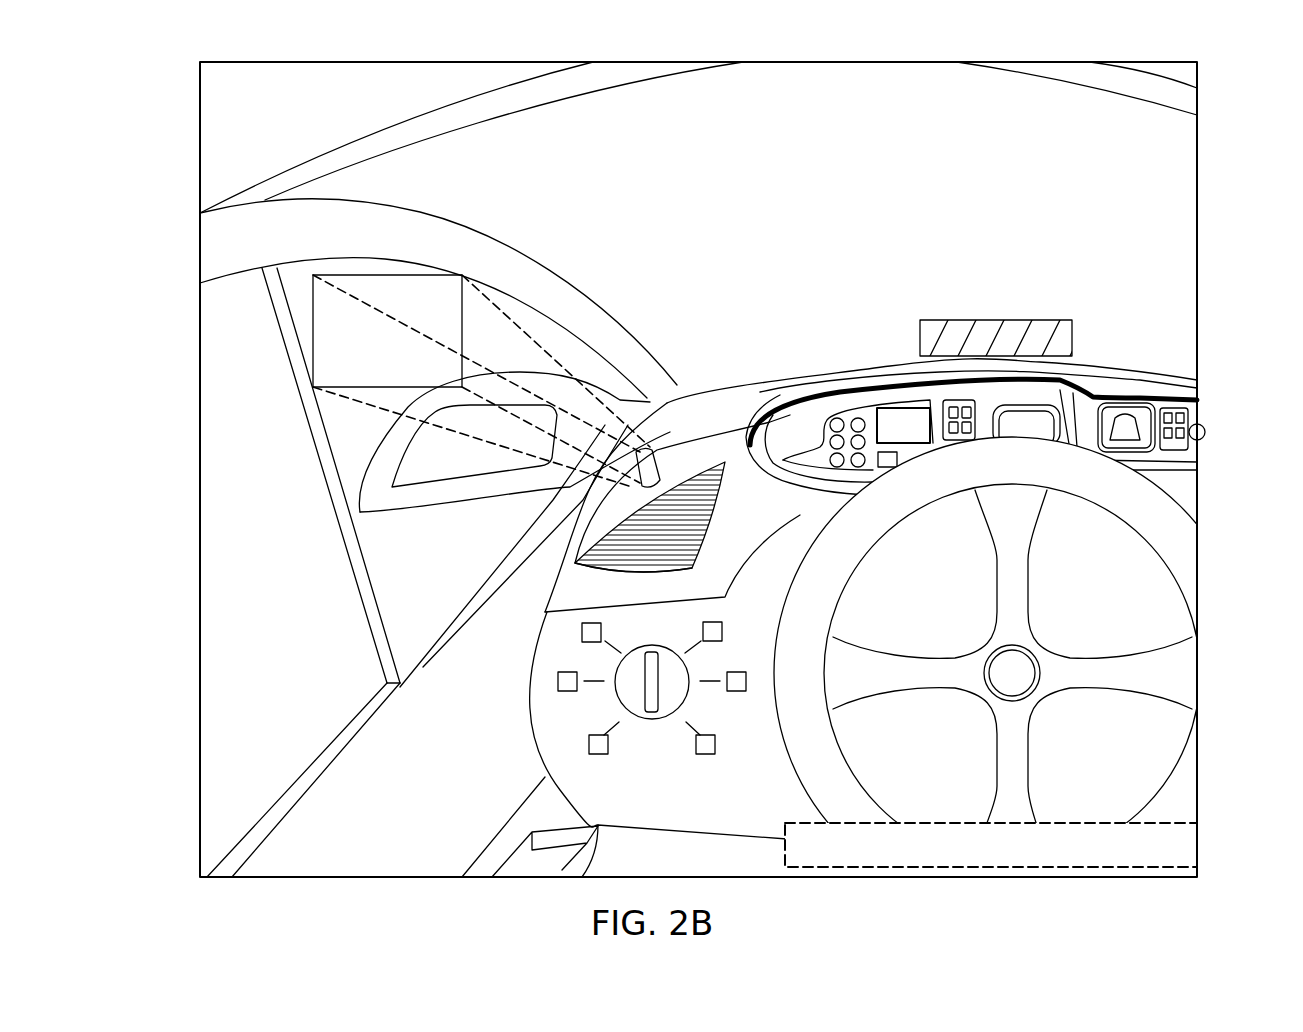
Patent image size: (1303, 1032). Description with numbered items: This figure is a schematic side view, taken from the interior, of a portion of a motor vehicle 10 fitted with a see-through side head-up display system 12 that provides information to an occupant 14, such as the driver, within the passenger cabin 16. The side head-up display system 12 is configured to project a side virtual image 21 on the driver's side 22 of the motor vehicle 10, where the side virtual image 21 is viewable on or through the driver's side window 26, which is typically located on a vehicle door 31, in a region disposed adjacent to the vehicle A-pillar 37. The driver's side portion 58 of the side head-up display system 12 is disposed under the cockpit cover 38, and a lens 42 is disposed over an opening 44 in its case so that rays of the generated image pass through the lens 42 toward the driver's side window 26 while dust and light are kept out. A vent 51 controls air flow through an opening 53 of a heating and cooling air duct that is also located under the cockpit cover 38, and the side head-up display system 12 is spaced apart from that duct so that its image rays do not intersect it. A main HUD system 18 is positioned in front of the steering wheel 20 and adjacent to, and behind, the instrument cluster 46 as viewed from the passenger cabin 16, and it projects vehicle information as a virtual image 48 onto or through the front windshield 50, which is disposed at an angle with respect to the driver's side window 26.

The motor vehicle 10 is at (285, 120).
The front windshield 50 is at (852, 90).
The vehicle A-pillar 37 is at (484, 243).
The side virtual image 21 is at (358, 273).
The driver's side window 26 is at (222, 388).
The vehicle door 31 is at (422, 668).
The driver's side 22 is at (333, 740).
The opening 44 is at (572, 518).
The lens 42 is at (652, 460).
The driver's side portion 58 is at (632, 425).
The side head-up display system 12 is at (656, 450).
The vent 51 is at (683, 517).
The opening of the air duct 53 is at (626, 552).
The cockpit cover 38 is at (738, 395).
The main HUD system 18 is at (892, 400).
The virtual image 48 is at (1002, 320).
The steering wheel 20 is at (800, 760).
The passenger cabin 16 is at (495, 800).
The instrument cluster 46 is at (975, 573).
The occupant 14 is at (800, 835).